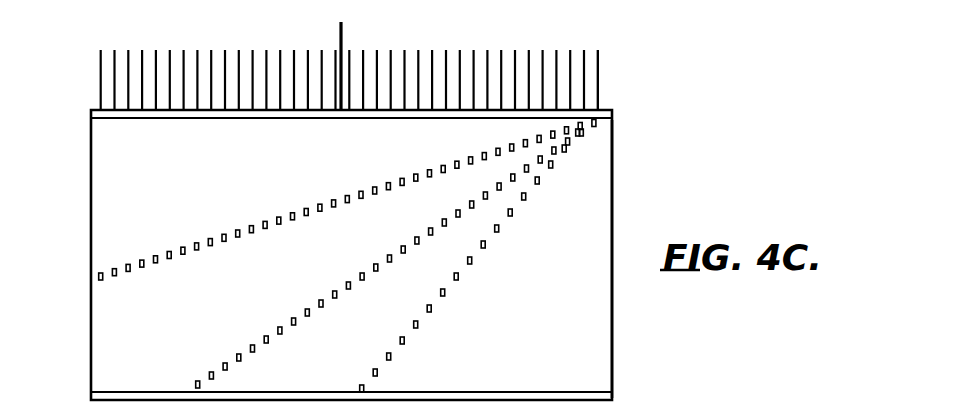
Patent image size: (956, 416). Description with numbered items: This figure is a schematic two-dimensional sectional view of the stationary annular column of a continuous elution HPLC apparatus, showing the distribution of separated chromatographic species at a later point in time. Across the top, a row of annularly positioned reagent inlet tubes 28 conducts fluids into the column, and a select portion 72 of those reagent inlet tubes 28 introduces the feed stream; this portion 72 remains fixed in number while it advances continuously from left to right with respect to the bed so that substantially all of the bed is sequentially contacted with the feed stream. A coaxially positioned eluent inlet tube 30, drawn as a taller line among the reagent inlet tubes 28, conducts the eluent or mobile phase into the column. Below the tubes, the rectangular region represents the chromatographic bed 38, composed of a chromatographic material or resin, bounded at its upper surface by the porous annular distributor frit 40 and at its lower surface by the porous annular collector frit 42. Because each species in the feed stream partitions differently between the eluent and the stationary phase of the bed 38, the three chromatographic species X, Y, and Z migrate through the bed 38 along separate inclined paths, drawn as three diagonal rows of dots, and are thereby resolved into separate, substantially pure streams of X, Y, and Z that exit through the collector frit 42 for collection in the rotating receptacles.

The portion of the reagent inlet tubes 72 is at (120, 42).
The eluent inlet tube 30 is at (344, 36).
The reagent inlet tubes 28 is at (602, 86).
The porous annular distributor frit 40 is at (91, 114).
The porous annular collector frit 42 is at (91, 393).
The chromatographic bed 38 is at (602, 343).
The chromatographic species Z is at (157, 266).
The chromatographic species Y is at (318, 300).
The chromatographic species X is at (475, 268).